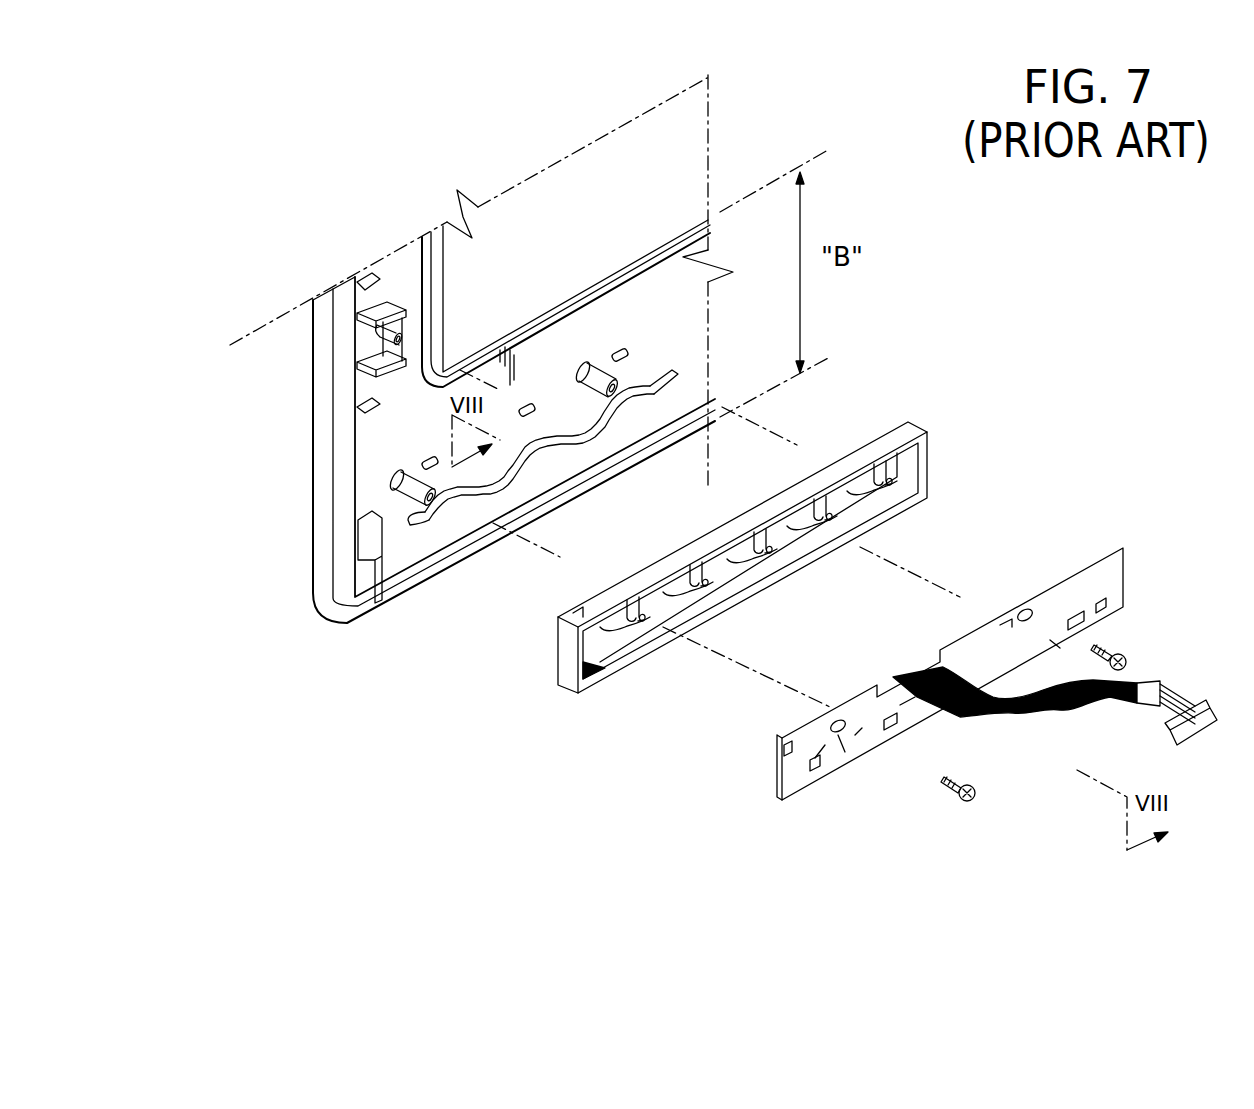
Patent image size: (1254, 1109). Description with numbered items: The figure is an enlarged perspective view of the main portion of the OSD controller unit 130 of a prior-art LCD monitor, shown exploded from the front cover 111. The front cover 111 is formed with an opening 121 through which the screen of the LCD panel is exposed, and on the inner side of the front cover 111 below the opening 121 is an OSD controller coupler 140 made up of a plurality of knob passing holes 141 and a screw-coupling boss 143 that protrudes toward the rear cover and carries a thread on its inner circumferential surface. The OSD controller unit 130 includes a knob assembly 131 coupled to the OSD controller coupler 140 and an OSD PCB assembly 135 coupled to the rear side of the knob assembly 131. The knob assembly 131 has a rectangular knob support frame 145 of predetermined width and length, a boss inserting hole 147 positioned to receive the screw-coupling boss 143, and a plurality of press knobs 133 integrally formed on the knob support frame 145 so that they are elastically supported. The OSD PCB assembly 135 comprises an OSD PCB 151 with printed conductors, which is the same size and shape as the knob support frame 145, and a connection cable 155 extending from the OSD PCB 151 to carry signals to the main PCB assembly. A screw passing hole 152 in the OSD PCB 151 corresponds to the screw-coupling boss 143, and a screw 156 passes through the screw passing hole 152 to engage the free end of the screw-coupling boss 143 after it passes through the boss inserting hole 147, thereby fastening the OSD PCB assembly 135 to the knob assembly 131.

The front cover 111 is at (313, 500).
The opening 121 is at (641, 257).
The OSD controller unit 130 is at (871, 661).
The knob assembly 131 is at (726, 620).
The press knobs 133 is at (670, 595).
The OSD PCB assembly 135 is at (975, 710).
The OSD controller coupler 140 is at (533, 526).
The knob passing holes 141 is at (480, 483).
The screw-coupling boss 143 is at (428, 497).
The knob support frame 145 is at (568, 665).
The boss inserting hole 147 is at (650, 600).
The OSD PCB 151 is at (797, 788).
The screw passing hole 152 is at (836, 721).
The connection cable 155 is at (1023, 703).
The screw 156 is at (1125, 656).